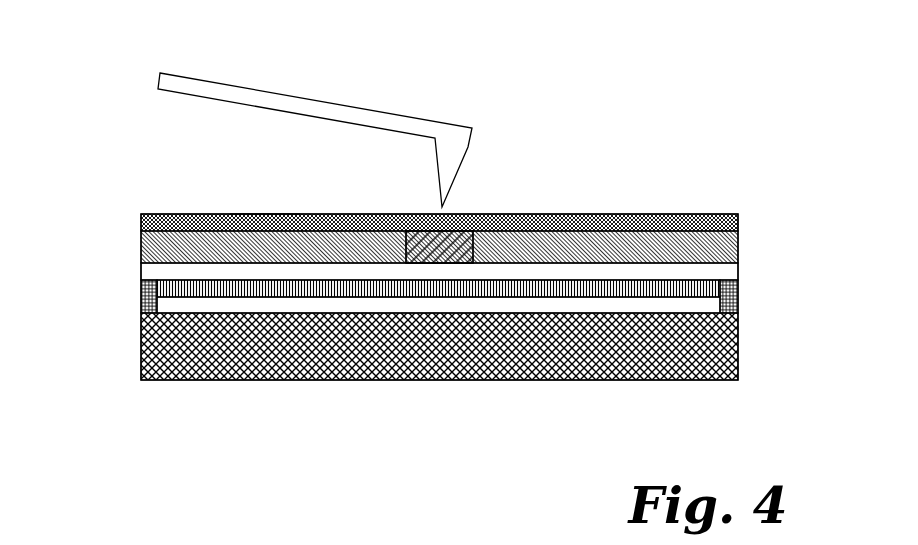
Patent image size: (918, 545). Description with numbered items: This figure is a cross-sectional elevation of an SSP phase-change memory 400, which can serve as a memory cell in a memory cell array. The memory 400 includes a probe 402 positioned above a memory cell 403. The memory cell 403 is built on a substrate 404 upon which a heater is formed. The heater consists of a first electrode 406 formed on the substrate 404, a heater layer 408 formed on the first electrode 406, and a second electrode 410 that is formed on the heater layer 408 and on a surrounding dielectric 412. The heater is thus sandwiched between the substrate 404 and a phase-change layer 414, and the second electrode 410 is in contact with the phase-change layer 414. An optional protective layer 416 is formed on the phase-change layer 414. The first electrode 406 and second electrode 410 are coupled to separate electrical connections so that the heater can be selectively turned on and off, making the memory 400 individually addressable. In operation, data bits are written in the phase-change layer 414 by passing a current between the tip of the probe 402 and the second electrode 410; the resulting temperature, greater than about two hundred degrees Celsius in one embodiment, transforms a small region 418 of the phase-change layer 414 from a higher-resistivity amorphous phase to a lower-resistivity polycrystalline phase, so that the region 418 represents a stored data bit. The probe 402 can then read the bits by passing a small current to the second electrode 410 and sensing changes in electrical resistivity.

The SSP phase-change memory 400 is at (543, 54).
The probe 402 is at (333, 107).
The memory cell 403 is at (263, 213).
The substrate 404 is at (732, 372).
The first electrode 406 is at (535, 305).
The heater layer 408 is at (420, 292).
The second electrode 410 is at (257, 272).
The dielectric 412 is at (142, 302).
The phase-change layer 414 is at (142, 248).
The protective layer 416 is at (640, 225).
The region 418 is at (445, 245).